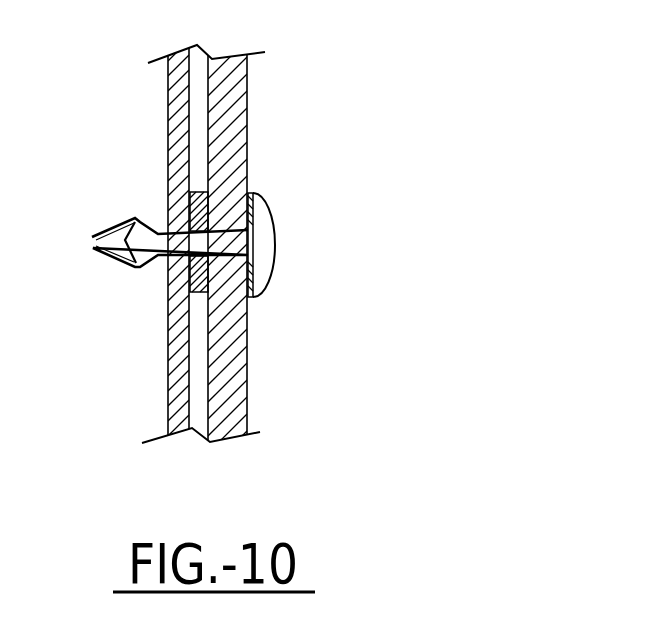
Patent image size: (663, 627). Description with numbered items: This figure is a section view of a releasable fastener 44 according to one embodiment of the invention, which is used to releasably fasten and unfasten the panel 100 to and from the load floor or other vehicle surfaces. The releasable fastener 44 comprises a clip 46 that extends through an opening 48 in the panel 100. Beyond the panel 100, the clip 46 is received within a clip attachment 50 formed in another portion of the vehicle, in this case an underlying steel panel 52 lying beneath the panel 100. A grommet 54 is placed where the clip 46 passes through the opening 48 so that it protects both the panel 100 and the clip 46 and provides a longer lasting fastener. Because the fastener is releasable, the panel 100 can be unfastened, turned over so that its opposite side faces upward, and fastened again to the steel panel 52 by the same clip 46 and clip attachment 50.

The releasable fastener 44 is at (248, 218).
The clip 46 is at (277, 246).
The opening 48 is at (246, 297).
The clip attachment 50 is at (107, 228).
The steel panel 52 is at (172, 118).
The grommet 54 is at (208, 192).
The panel 100 is at (248, 103).